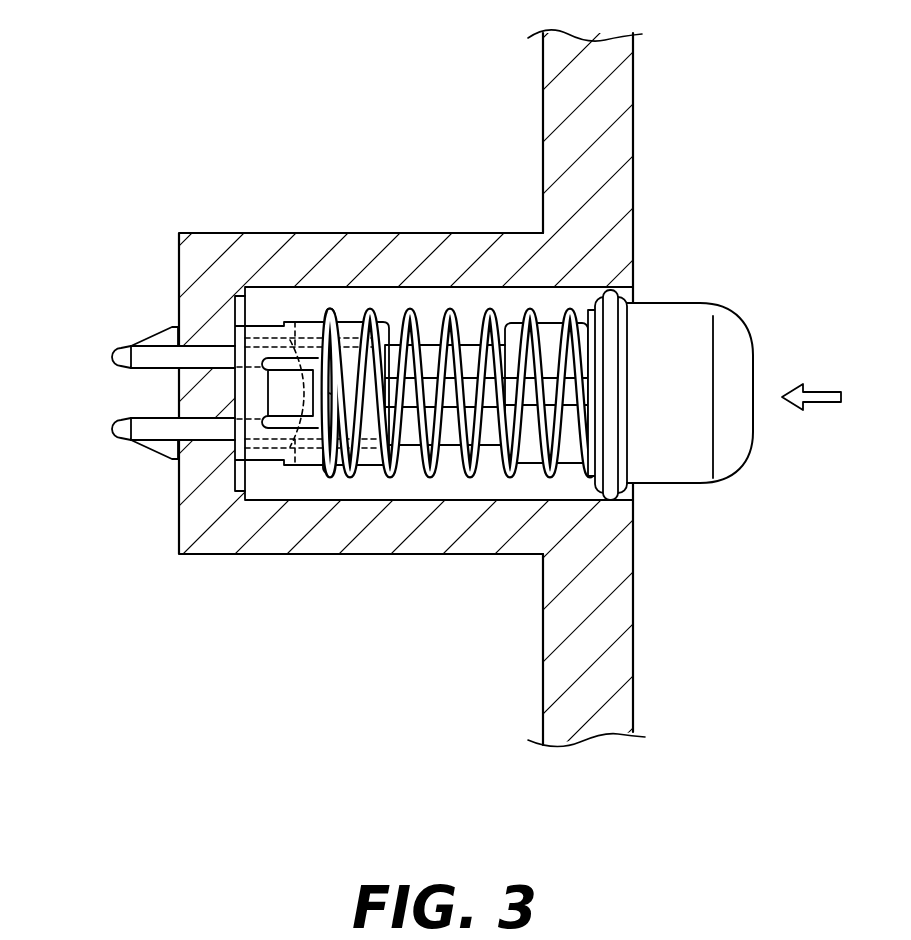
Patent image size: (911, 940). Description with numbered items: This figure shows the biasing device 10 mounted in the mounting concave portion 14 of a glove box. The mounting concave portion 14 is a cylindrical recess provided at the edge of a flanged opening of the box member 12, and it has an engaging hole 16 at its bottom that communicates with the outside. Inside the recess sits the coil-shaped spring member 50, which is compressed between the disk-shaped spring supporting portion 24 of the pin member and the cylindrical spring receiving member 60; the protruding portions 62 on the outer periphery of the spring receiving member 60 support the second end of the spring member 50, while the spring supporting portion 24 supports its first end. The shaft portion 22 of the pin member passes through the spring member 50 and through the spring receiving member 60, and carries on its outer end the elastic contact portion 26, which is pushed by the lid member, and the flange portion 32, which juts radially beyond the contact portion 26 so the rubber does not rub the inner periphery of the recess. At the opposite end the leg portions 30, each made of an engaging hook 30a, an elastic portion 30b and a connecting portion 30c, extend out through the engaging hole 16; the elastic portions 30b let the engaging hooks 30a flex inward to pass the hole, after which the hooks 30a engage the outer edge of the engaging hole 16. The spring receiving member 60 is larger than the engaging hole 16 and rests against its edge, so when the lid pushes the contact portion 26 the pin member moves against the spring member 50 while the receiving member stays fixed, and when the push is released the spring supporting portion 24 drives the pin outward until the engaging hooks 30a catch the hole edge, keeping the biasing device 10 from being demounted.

The biasing device 10 is at (641, 451).
The box member 12 is at (625, 74).
The mounting concave portion 14 is at (373, 296).
The engaging hole 16 is at (197, 303).
The shaft portion 22 is at (403, 426).
The spring supporting portion 24 is at (590, 303).
The contact portion 26 is at (733, 325).
The leg portions 30 is at (142, 343).
The engaging hook 30a is at (165, 343).
The elastic portion 30b is at (212, 354).
The connecting portion 30c is at (114, 357).
The flange portion 32 is at (607, 288).
The spring member 50 is at (452, 312).
The spring receiving member 60 is at (302, 330).
The protruding portions 62 is at (306, 412).